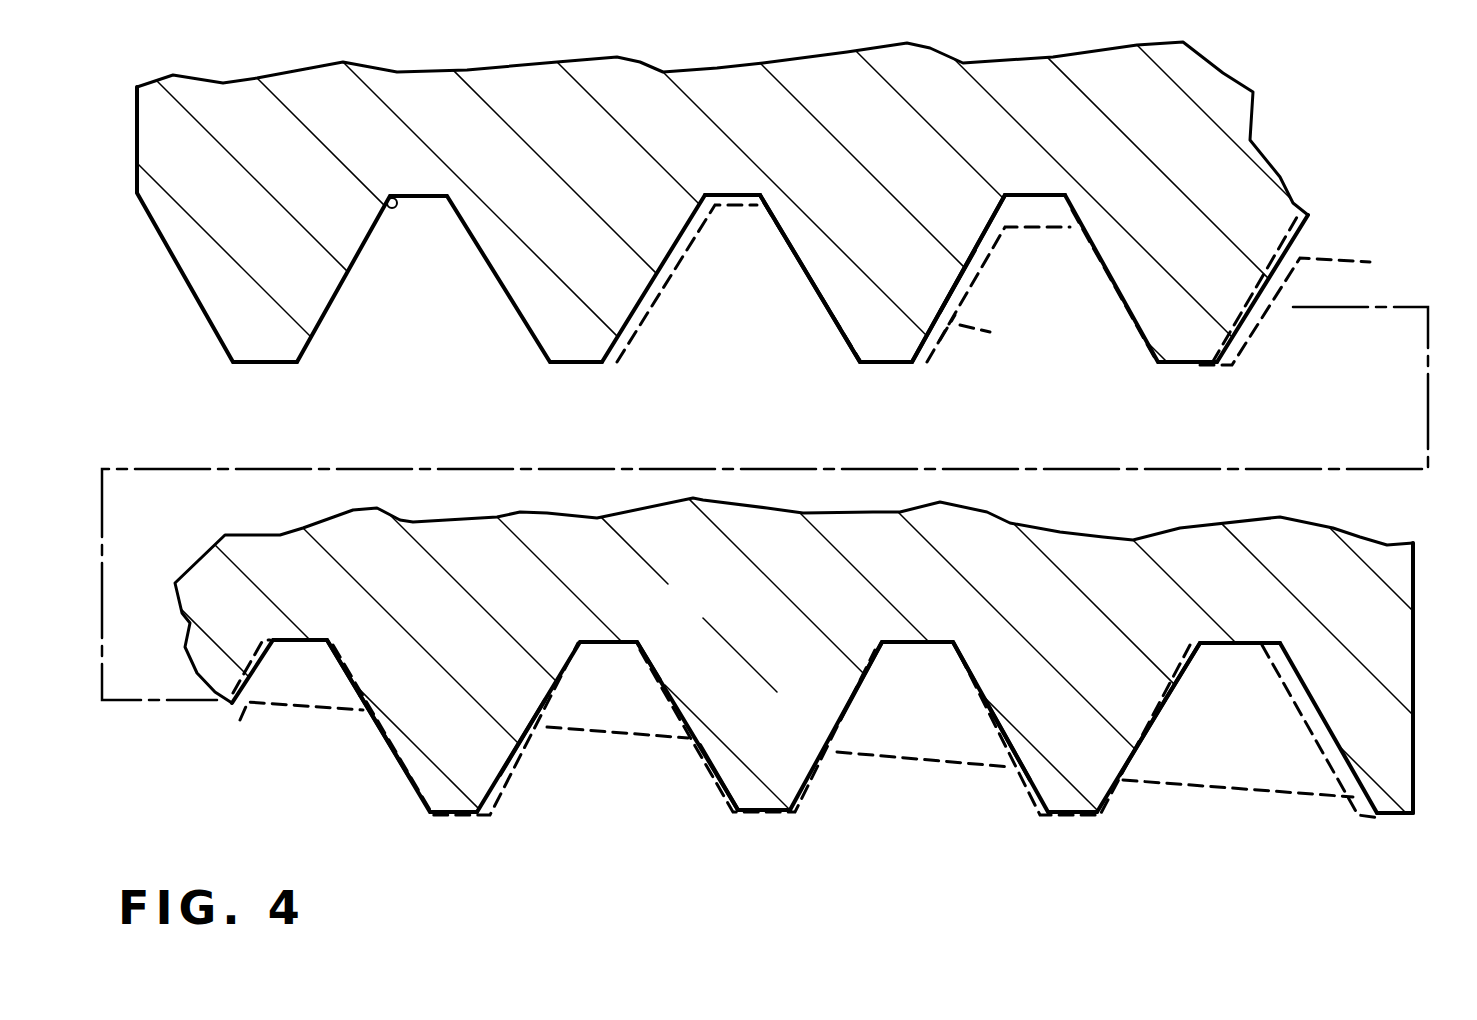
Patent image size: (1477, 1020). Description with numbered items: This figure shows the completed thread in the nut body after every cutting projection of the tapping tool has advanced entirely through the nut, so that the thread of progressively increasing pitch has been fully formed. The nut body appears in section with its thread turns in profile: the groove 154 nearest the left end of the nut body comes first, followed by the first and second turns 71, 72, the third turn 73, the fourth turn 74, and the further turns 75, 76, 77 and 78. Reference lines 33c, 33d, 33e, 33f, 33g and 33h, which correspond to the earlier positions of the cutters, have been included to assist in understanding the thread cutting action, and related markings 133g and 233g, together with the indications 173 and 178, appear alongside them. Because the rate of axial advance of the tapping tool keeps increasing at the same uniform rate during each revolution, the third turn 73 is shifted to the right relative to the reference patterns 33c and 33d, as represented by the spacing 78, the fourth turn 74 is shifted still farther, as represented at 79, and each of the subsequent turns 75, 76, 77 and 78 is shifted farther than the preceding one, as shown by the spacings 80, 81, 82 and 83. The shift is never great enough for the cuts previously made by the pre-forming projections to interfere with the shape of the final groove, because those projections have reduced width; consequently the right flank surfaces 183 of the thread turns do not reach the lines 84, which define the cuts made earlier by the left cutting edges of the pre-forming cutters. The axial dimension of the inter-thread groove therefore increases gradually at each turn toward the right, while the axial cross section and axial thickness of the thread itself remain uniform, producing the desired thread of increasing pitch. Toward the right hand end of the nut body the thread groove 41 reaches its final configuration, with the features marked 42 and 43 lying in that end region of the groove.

The thread groove 154 is at (386, 204).
The first thread 71 is at (313, 293).
The second thread 72 is at (515, 283).
The third turn 73 is at (843, 312).
The fourth turn 74 is at (1153, 323).
The thread turn 75 is at (422, 760).
The thread turn 76 is at (727, 760).
The thread turn 77 is at (1043, 777).
The spacing 78 is at (960, 270).
The spacing 79 is at (1257, 288).
The spacing 80 is at (533, 720).
The spacing 81 is at (817, 800).
The spacing 82 is at (1133, 737).
The spacing 83 is at (1362, 790).
The lines 84 is at (952, 322).
The reference line 33c is at (763, 197).
The reference line 33d is at (1072, 213).
The reference line 33e is at (350, 677).
The reference line 33f is at (693, 623).
The reference line 33g is at (850, 673).
The reference line 33h is at (1175, 662).
The thread groove 41 is at (1198, 650).
The thread flank 42 is at (1313, 703).
The thread root corner 43 is at (1113, 793).
The flank surface 133g is at (830, 733).
The crest corner 173 is at (1005, 195).
The flank surface 178 is at (962, 297).
The right flank surface 183 is at (942, 338).
The flank surface 233g is at (1013, 640).